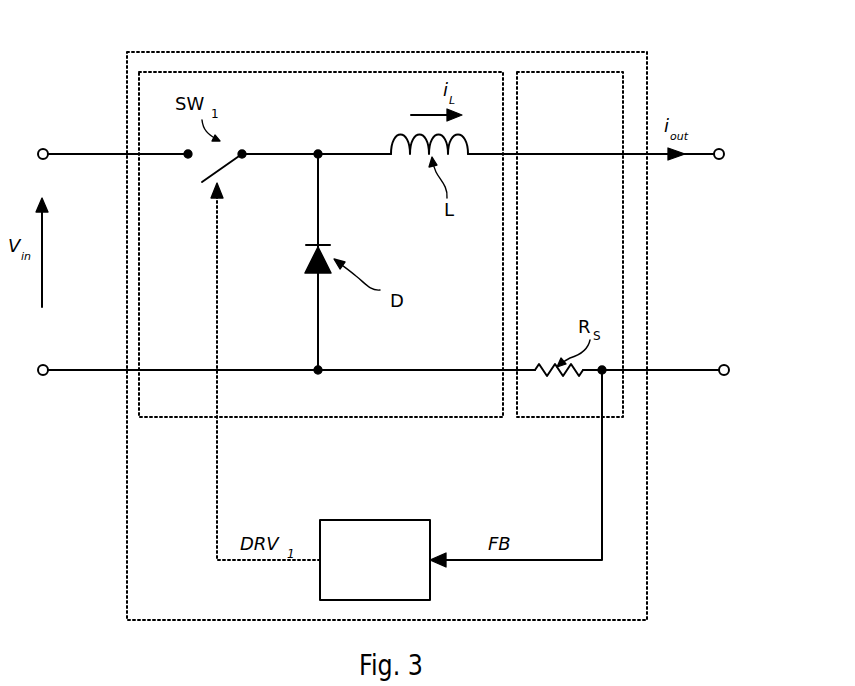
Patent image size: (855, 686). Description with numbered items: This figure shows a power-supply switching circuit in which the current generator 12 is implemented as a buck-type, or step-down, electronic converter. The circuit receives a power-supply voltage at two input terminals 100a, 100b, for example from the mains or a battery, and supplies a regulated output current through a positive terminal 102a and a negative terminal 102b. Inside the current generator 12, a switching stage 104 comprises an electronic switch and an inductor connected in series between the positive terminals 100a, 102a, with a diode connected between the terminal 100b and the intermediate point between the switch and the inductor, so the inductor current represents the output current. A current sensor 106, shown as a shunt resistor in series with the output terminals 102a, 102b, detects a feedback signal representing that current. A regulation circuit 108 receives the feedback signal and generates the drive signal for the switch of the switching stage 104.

The current generator 12 is at (623, 53).
The switching stage 104 is at (237, 73).
The current sensor 106 is at (560, 72).
The regulation circuit 108 is at (385, 520).
The input terminal 100a is at (44, 151).
The input terminal 100b is at (45, 367).
The positive terminal 102a is at (720, 150).
The negative terminal 102b is at (726, 367).